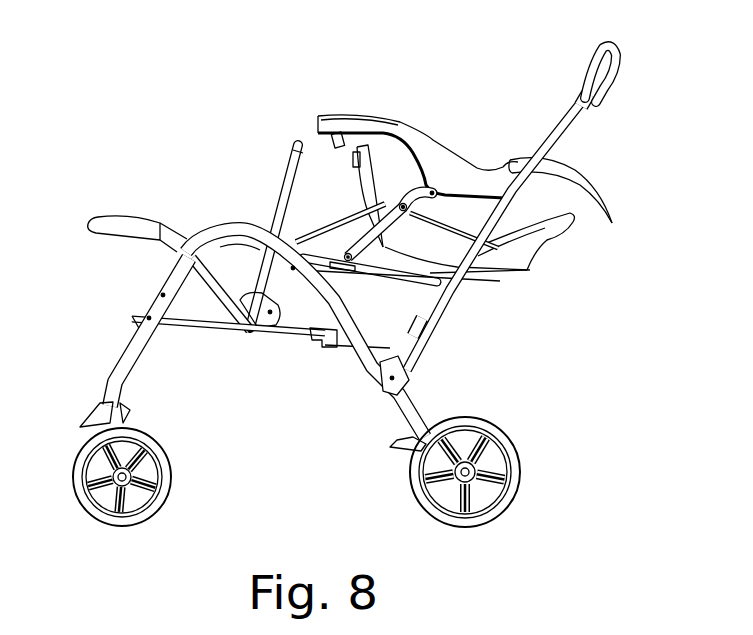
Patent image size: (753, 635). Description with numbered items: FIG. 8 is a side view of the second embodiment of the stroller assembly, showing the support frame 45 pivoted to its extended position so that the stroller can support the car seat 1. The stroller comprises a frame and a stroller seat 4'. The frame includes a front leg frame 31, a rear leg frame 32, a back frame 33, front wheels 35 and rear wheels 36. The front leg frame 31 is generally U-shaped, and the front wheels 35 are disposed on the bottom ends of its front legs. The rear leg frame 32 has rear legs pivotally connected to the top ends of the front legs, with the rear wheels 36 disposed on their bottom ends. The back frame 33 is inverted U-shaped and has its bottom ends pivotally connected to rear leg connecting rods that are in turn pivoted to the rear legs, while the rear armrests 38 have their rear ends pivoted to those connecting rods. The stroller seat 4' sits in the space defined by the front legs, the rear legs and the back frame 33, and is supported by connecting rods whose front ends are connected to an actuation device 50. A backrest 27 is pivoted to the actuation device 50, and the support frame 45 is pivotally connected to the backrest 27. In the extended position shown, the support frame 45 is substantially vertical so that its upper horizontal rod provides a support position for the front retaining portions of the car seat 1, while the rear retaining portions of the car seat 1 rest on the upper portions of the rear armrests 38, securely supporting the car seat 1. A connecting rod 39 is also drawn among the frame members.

The car seat 1 is at (609, 190).
The backrest 27 is at (295, 150).
The front leg frame 31 is at (127, 357).
The rear leg frame 32 is at (413, 412).
The back frame 33 is at (567, 120).
The front wheels 35 is at (162, 503).
The rear wheels 36 is at (423, 508).
The rear armrests 38 is at (400, 140).
The connecting rod 39 is at (185, 324).
The support frame 45 is at (272, 210).
The actuation device 50 is at (277, 330).
The stroller seat 4' is at (350, 379).